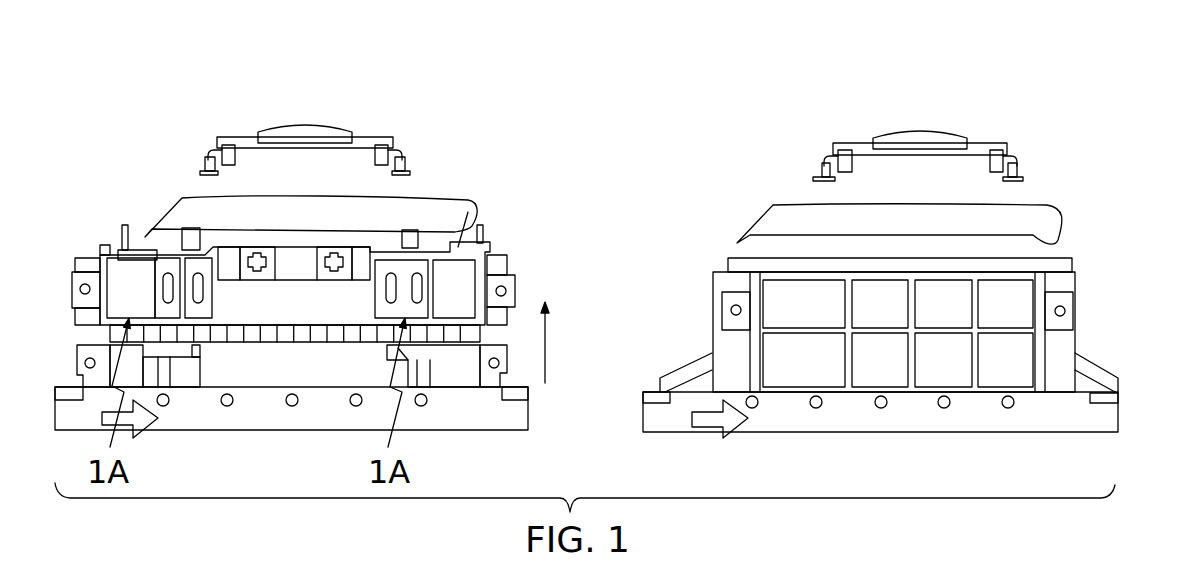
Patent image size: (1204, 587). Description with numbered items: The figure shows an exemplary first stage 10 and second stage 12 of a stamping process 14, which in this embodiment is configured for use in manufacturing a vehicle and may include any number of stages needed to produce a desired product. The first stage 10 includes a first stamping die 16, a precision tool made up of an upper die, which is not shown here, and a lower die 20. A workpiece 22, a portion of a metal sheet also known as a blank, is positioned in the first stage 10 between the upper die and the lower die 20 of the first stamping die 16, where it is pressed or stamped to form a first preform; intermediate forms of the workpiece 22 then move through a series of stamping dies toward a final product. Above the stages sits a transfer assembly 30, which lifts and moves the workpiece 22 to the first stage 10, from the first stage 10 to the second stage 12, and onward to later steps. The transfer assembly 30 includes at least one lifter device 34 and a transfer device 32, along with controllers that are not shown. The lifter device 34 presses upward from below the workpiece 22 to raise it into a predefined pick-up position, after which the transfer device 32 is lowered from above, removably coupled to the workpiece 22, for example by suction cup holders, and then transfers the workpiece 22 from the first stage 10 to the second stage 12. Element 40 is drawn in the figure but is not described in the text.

The first stage 10 is at (474, 120).
The second stage 12 is at (1005, 100).
The stamping process 14 is at (756, 76).
The first stamping die 16 is at (55, 262).
The lower die 20 is at (72, 312).
The workpiece 22 is at (436, 197).
The transfer assembly 30 is at (168, 146).
The transfer device 32 is at (232, 136).
The lifter device 34 is at (445, 233).
The platform 40 is at (138, 243).